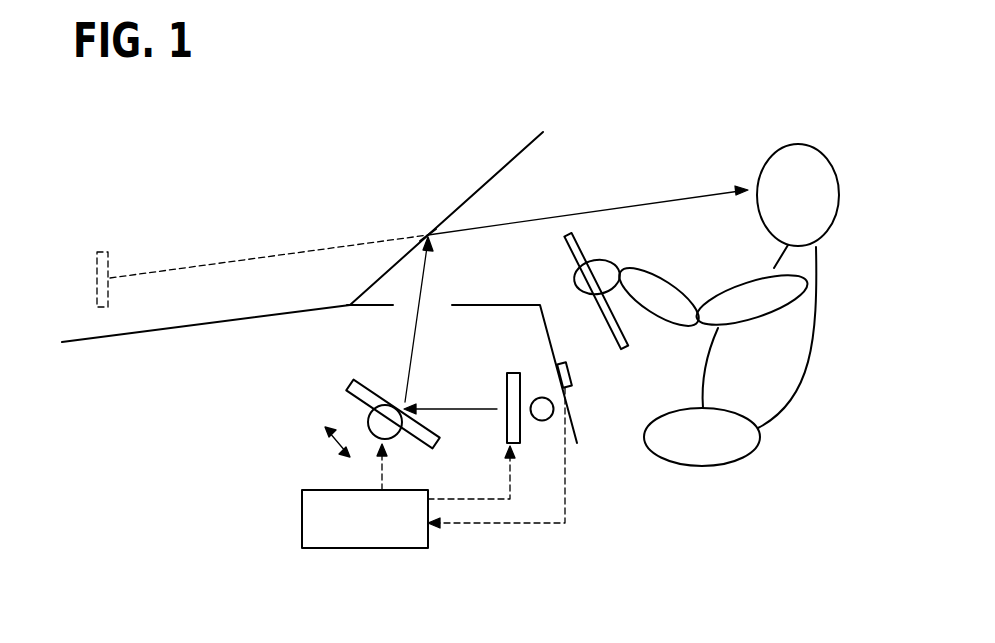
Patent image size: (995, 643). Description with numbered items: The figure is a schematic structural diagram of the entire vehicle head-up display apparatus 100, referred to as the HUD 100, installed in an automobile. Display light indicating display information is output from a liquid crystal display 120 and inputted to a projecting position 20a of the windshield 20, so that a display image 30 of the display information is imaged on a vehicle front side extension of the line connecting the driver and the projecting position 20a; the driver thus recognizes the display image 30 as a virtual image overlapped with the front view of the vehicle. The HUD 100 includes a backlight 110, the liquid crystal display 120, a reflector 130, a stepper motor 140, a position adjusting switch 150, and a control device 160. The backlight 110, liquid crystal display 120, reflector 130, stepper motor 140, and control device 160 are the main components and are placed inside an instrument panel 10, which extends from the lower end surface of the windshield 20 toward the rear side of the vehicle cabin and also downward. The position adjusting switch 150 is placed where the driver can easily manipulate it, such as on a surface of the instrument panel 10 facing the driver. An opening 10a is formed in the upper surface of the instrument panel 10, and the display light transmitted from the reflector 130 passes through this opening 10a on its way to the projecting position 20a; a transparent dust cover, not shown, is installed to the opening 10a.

The instrument panel 10 is at (525, 305).
The opening 10a is at (435, 307).
The windshield 20 is at (480, 189).
The projecting position 20a is at (428, 233).
The display image 30 is at (103, 251).
The vehicle head-up display apparatus 100 is at (262, 405).
The backlight 110 is at (542, 421).
The liquid crystal display 120 is at (513, 372).
The reflector 130 is at (377, 388).
The stepper motor 140 is at (392, 440).
The position adjusting switch 150 is at (572, 375).
The control device 160 is at (328, 548).